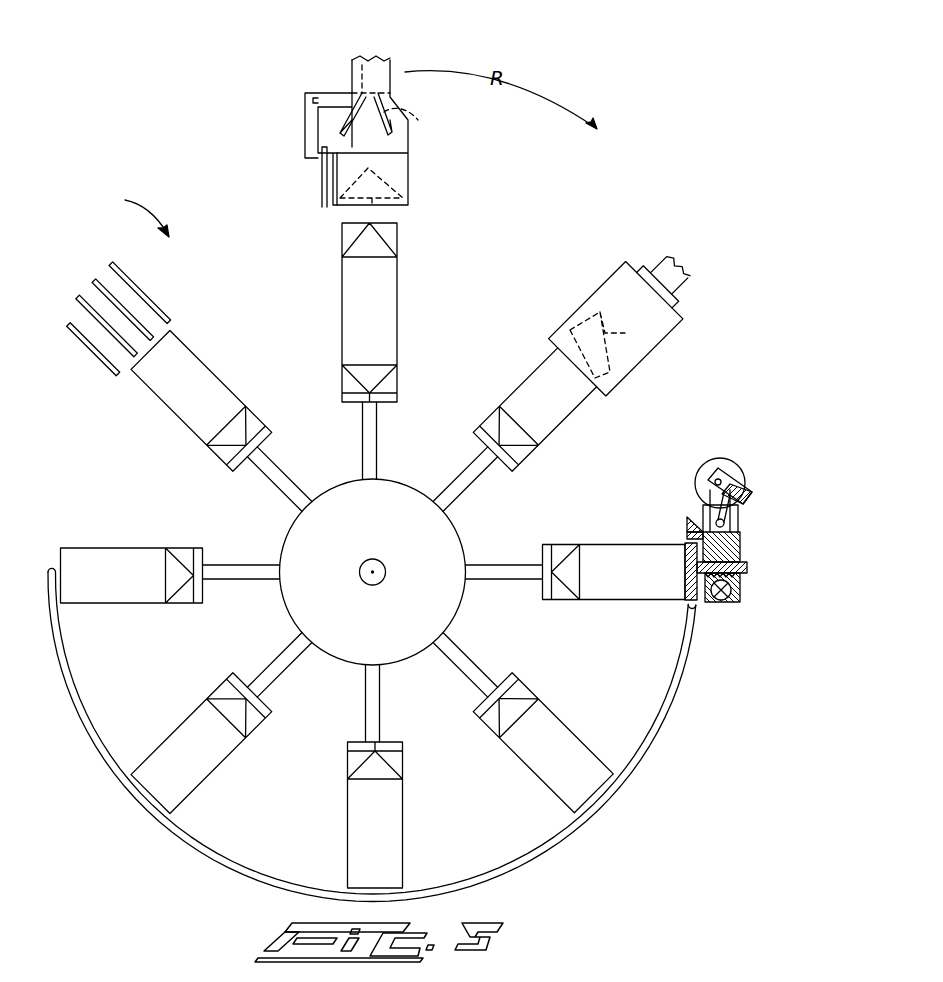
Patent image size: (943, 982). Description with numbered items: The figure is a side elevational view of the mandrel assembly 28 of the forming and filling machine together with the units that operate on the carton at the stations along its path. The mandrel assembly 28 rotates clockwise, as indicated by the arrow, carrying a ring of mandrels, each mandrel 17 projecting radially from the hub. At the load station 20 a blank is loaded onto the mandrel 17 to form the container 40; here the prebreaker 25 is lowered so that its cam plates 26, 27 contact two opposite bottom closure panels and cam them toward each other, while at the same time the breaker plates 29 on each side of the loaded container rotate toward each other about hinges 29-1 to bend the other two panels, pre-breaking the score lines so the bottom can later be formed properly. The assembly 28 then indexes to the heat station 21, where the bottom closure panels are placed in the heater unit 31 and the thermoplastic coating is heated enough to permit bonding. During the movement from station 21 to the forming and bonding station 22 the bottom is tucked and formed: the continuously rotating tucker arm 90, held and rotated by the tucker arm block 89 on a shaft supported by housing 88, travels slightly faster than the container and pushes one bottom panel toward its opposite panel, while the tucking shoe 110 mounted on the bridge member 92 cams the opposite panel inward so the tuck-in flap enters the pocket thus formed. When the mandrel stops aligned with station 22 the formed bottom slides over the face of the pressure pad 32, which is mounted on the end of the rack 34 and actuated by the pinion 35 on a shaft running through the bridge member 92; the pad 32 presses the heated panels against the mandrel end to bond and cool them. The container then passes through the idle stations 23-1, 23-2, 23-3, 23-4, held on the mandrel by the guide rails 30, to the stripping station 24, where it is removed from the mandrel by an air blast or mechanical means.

The mandrel 17 is at (472, 463).
The load station 20 is at (371, 62).
The heat station 21 is at (674, 269).
The forming and bonding station 22 is at (710, 521).
The idle station 23-1 is at (555, 743).
The idle station 23-2 is at (403, 815).
The idle station 23-3 is at (201, 749).
The idle station 23-4 is at (105, 575).
The stripping station 24 is at (167, 372).
The prebreaker 25 is at (382, 125).
The cam plate 26 is at (418, 120).
The cam plate 27 is at (350, 128).
The mandrel assembly 28 is at (133, 213).
The breaker plate 29 is at (378, 173).
The hinge 29-1 is at (373, 205).
The guide rail 30 is at (90, 725).
The heater unit 31 is at (662, 325).
The pressure pad 32 is at (690, 590).
The rack 34 is at (746, 575).
The pinion 35 is at (726, 600).
The container 40 is at (387, 282).
The housing 88 is at (722, 460).
The tucker arm block 89 is at (735, 486).
The tucker arm 90 is at (712, 512).
The bridge member 92 is at (740, 548).
The tucking shoe 110 is at (690, 530).